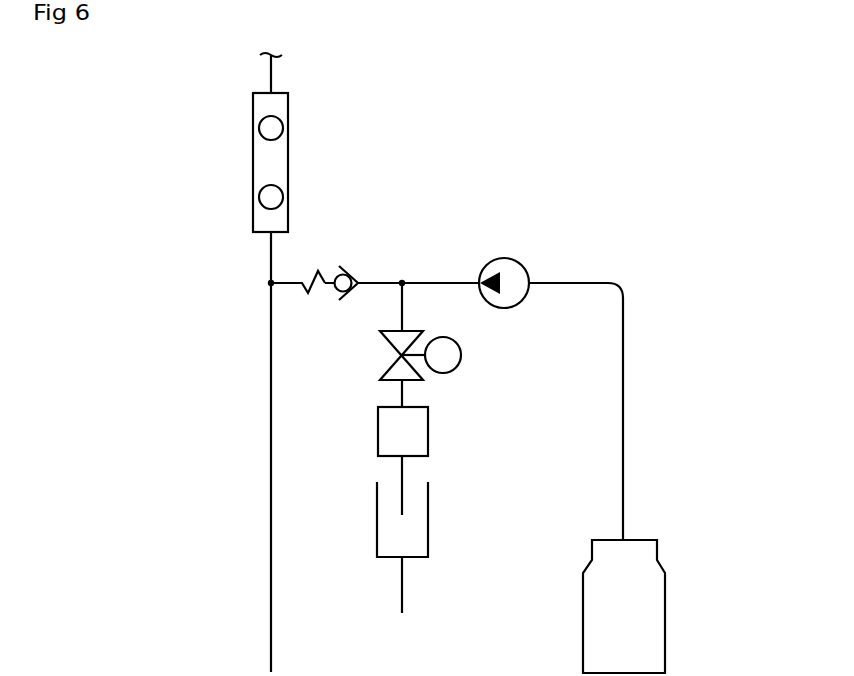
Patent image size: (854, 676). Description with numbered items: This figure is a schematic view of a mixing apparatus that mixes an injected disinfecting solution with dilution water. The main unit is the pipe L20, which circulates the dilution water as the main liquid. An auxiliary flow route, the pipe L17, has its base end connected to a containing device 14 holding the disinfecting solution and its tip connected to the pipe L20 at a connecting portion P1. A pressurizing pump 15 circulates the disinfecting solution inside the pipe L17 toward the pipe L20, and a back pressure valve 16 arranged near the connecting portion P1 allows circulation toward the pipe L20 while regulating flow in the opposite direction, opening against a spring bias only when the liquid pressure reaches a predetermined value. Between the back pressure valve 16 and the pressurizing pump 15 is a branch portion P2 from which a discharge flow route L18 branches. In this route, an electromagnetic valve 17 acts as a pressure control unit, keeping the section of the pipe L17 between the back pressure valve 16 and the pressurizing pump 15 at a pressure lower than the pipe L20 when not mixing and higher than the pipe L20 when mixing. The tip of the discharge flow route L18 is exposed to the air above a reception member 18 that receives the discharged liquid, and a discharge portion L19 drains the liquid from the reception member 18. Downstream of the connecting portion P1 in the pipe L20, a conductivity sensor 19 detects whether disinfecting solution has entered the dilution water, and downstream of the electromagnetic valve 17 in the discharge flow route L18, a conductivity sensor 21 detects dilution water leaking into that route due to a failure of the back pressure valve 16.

The containing device 14 is at (665, 623).
The pressurizing pump 15 is at (502, 258).
The back pressure valve 16 is at (325, 270).
The electromagnetic valve 17 is at (462, 356).
The reception member 18 is at (430, 512).
The conductivity sensor 19 is at (250, 152).
The conductivity sensor 21 is at (430, 432).
The connecting portion P1 is at (266, 283).
The branch portion P2 is at (402, 279).
The pipe L17 is at (577, 283).
The discharge flow route L18 is at (405, 465).
The discharge portion L19 is at (405, 577).
The pipe L20 is at (268, 552).